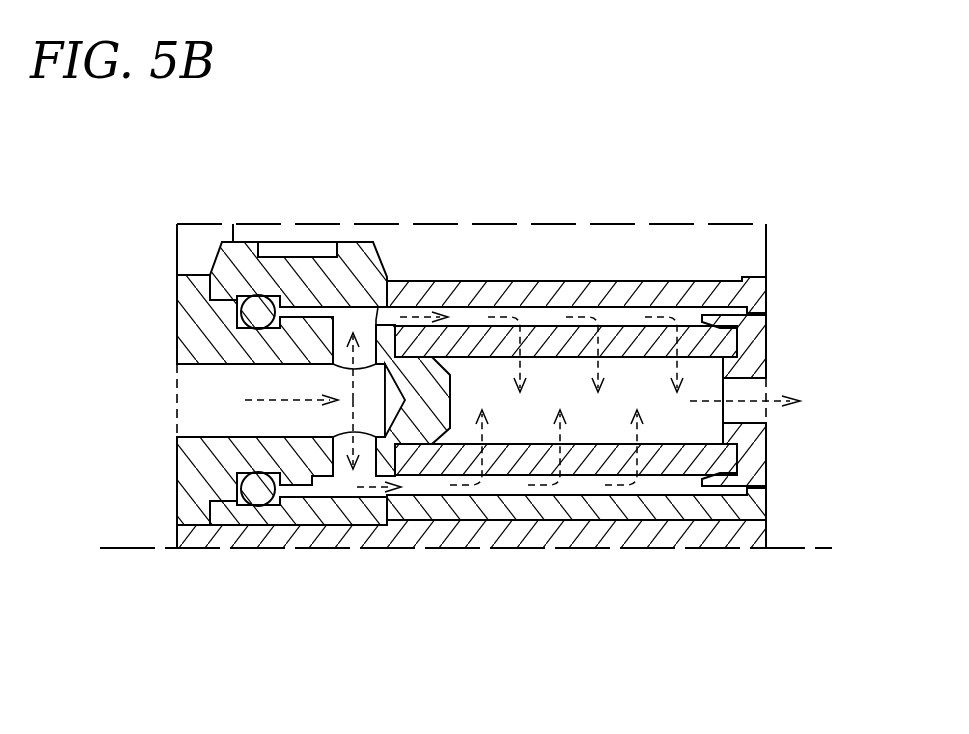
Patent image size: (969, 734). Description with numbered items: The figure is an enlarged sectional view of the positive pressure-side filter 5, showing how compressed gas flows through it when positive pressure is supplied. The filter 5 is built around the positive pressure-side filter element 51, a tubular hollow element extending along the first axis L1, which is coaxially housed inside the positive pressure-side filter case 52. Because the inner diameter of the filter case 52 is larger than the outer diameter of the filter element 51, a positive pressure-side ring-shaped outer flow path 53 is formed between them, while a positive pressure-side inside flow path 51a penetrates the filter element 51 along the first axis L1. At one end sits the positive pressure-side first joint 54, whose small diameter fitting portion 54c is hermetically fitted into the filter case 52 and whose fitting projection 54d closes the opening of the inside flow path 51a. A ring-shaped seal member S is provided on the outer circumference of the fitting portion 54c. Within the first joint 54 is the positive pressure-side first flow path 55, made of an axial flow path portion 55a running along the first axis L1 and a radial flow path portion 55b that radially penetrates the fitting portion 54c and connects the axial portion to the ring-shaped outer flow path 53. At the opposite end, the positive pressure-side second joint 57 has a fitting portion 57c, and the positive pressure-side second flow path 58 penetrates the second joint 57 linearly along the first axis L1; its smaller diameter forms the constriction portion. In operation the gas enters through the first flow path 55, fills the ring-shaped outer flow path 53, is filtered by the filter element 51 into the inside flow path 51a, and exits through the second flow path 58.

The positive pressure-side filter 5 is at (556, 189).
The positive pressure-side filter element 51 is at (612, 340).
The positive pressure-side inside flow path 51a is at (541, 437).
The positive pressure-side filter case 52 is at (300, 273).
The positive pressure-side ring-shaped outer flow path 53 is at (466, 300).
The positive pressure-side first joint 54 is at (158, 481).
The fitting portion 54c is at (286, 455).
The fitting projection 54d is at (418, 412).
The positive pressure-side first flow path 55 is at (82, 296).
The axial flow path portion 55a is at (217, 378).
The radial flow path portion 55b is at (327, 353).
The positive pressure-side second joint 57 is at (795, 342).
The fitting portion 57c is at (748, 462).
The positive pressure-side second flow path 58 is at (750, 408).
The ring-shaped seal member S is at (258, 489).
The first axis L1 is at (490, 553).